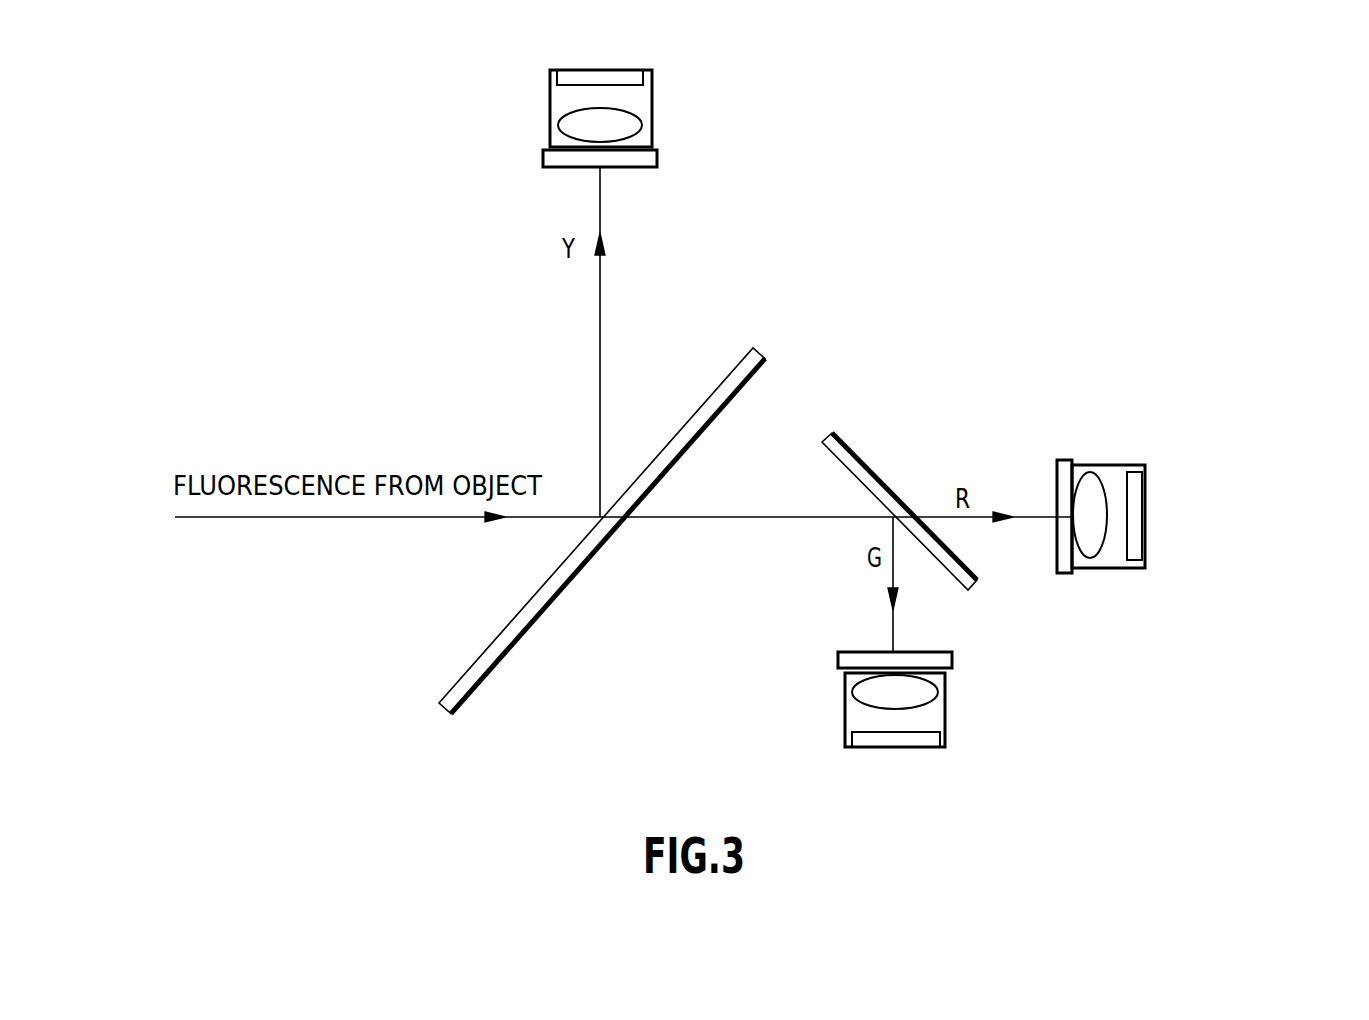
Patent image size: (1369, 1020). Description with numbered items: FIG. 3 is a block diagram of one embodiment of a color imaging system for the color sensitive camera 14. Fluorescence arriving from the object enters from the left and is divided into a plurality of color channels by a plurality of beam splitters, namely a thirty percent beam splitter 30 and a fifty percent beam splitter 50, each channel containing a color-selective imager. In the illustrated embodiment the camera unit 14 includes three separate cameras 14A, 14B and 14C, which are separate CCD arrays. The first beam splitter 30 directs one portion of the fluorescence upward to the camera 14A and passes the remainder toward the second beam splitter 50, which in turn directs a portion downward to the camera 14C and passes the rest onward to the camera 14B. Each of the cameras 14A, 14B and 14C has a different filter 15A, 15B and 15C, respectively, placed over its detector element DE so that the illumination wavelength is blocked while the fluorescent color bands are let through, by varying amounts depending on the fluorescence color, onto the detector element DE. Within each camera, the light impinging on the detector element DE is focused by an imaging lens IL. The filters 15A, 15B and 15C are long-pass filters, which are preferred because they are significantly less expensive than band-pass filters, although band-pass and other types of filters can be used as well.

The camera 14 is at (1135, 188).
The camera 14A is at (652, 100).
The camera 14B is at (1105, 465).
The camera 14C is at (945, 738).
The filter 15A is at (632, 168).
The filter 15B is at (1062, 573).
The filter 15C is at (952, 655).
The 30% beam splitter 30 is at (738, 355).
The 50% beam splitter 50 is at (843, 442).
The detector element DE is at (600, 70).
The imaging lens IL is at (570, 127).